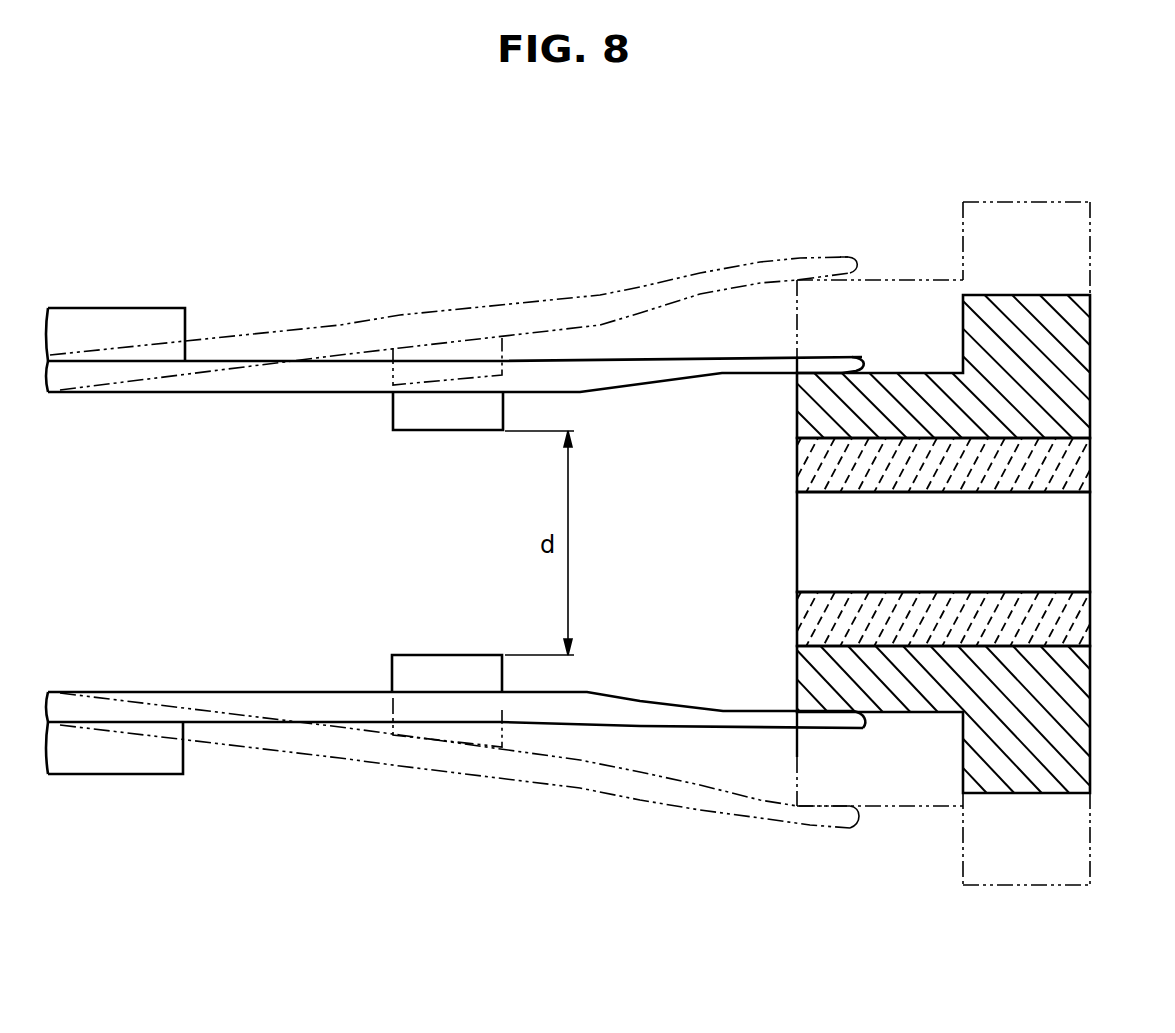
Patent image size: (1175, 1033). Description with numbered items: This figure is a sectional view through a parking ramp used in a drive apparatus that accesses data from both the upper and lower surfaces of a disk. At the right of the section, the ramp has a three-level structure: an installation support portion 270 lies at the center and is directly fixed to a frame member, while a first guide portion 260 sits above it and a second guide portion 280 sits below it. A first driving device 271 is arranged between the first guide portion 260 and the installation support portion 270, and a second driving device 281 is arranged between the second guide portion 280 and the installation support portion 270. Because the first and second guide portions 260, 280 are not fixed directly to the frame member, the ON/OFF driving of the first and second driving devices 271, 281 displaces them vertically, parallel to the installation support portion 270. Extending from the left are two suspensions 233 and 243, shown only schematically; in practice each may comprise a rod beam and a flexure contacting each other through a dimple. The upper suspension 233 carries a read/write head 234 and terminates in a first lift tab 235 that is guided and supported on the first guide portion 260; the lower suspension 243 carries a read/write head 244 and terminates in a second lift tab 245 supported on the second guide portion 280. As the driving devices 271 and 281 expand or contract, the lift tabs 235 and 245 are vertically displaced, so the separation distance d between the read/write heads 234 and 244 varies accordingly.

The suspension 233 is at (612, 370).
The read/write head 234 is at (428, 422).
The first lift tab 235 is at (837, 363).
The suspension 243 is at (600, 715).
The read/write head 244 is at (425, 663).
The second lift tab 245 is at (833, 718).
The first guide portion 260 is at (1068, 357).
The installation support portion 270 is at (1077, 541).
The first driving device 271 is at (1075, 462).
The second guide portion 280 is at (1068, 731).
The second driving device 281 is at (1077, 625).